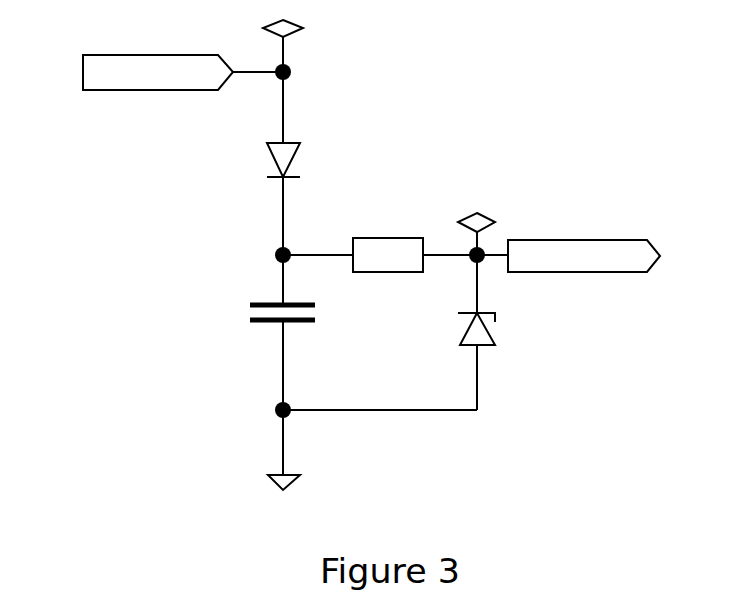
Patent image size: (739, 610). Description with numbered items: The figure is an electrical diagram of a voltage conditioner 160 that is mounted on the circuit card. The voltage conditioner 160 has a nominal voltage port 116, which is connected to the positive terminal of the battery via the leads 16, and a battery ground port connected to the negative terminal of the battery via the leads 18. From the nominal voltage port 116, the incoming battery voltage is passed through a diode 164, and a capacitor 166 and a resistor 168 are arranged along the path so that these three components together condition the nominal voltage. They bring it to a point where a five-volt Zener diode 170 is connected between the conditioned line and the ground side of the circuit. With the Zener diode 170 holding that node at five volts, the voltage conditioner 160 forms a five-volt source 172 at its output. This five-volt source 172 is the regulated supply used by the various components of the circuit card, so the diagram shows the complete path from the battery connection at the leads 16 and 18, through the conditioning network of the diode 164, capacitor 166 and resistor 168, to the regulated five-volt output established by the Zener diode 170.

The voltage conditioner 160 is at (580, 55).
The leads 16 is at (83, 70).
The nominal voltage port 116 is at (170, 55).
The diode 164 is at (267, 146).
The resistor 168 is at (397, 238).
The 5-volt source 172 is at (586, 240).
The 5-volt Zener diode 170 is at (496, 346).
The capacitor 166 is at (315, 321).
The leads 18 is at (283, 453).